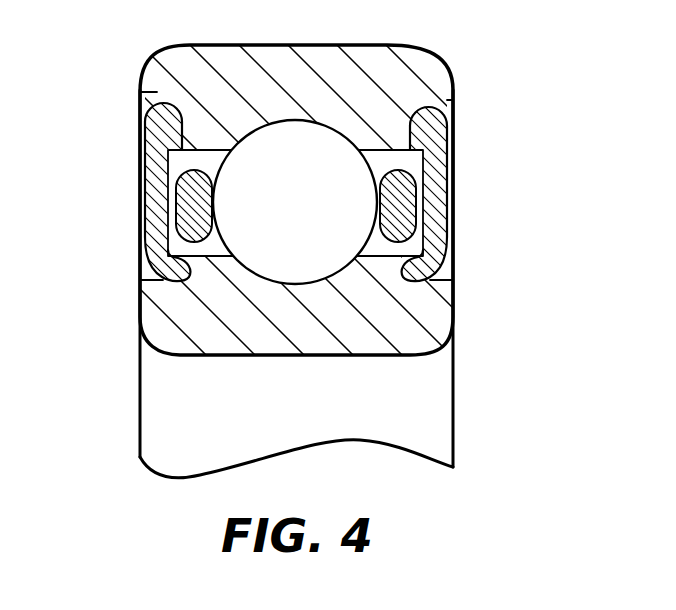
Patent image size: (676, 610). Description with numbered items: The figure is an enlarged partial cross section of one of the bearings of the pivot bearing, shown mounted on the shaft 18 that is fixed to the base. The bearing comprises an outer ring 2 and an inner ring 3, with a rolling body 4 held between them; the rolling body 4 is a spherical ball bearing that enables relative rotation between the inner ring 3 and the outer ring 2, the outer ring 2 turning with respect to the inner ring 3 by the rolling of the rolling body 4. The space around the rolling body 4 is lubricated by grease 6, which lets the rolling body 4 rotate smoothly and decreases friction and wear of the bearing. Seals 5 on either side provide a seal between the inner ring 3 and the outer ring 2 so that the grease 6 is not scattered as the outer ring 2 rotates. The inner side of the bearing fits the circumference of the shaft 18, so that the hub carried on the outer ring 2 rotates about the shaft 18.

The outer ring 2 is at (153, 82).
The inner ring 3 is at (432, 310).
The rolling body 4 is at (295, 202).
The seals 5 is at (445, 143).
The grease 6 is at (183, 205).
The shaft 18 is at (454, 386).